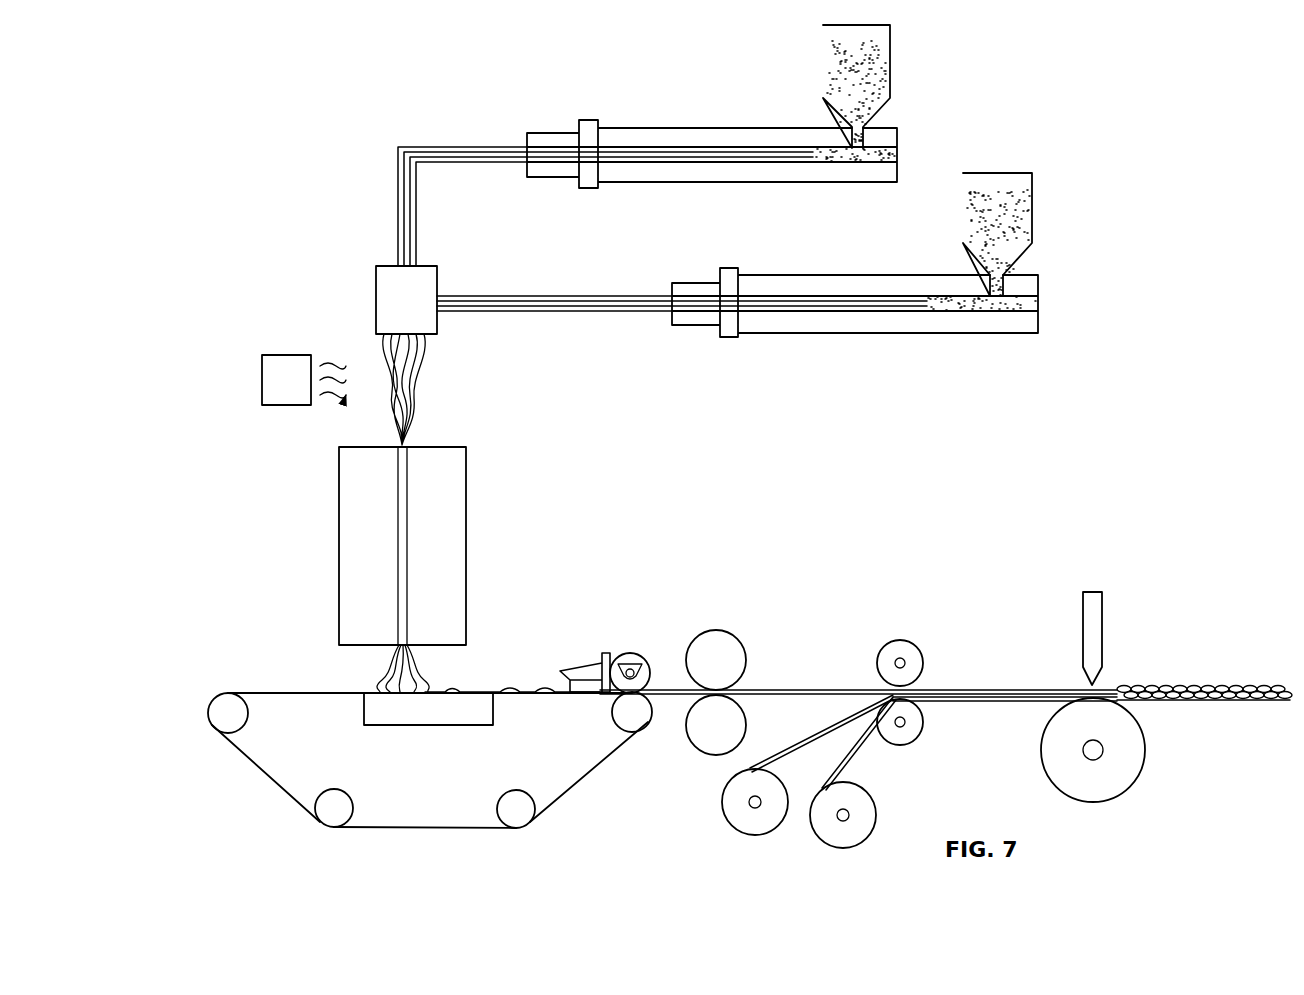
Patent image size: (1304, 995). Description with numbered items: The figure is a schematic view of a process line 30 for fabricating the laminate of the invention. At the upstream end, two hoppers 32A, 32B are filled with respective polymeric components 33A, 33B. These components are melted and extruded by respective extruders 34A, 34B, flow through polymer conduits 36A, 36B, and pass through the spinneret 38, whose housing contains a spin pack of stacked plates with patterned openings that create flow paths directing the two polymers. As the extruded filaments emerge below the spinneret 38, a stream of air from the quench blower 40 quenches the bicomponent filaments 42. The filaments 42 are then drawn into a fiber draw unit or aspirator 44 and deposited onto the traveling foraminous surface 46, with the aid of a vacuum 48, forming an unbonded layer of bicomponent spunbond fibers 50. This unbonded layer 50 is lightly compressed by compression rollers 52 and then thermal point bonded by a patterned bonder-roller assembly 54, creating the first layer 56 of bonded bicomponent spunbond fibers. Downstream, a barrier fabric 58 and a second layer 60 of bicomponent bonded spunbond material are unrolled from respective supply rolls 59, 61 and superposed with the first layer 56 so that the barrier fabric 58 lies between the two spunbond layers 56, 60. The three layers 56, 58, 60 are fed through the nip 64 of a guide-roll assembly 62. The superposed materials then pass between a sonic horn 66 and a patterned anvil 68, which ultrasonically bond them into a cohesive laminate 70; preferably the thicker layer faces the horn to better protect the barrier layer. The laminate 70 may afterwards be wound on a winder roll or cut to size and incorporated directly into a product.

The process line 30 is at (234, 158).
The hopper 32A is at (988, 173).
The hopper 32B is at (890, 27).
The polymeric component 33A is at (1014, 224).
The polymeric component 33B is at (873, 72).
The extruder 34A is at (769, 272).
The extruder 34B is at (628, 126).
The polymer conduit 36A is at (490, 296).
The polymer conduit 36B is at (436, 147).
The spinneret 38 is at (376, 290).
The quench blower 40 is at (282, 358).
The bicomponent filaments 42 is at (420, 375).
The fiber draw unit or aspirator 44 is at (468, 437).
The traveling foraminous surface 46 is at (500, 842).
The vacuum 48 is at (478, 727).
The unbonded layer of bicomponent spunbond fibers 50 is at (503, 690).
The compression rollers 52 is at (637, 654).
The patterned bonder-roller assembly 54 is at (700, 630).
The first layer of bonded bicomponent spunbond fibers 56 is at (773, 688).
The barrier fabric 58 is at (818, 741).
The supply roll 59 is at (722, 806).
The second layer of bicomponent bonded spunbond material 60 is at (855, 748).
The supply roll 61 is at (872, 800).
The guide-roll assembly 62 is at (898, 645).
The nip 64 is at (928, 679).
The sonic horn 66 is at (1097, 625).
The patterned anvil 68 is at (1110, 792).
The cohesive laminate 70 is at (1207, 688).